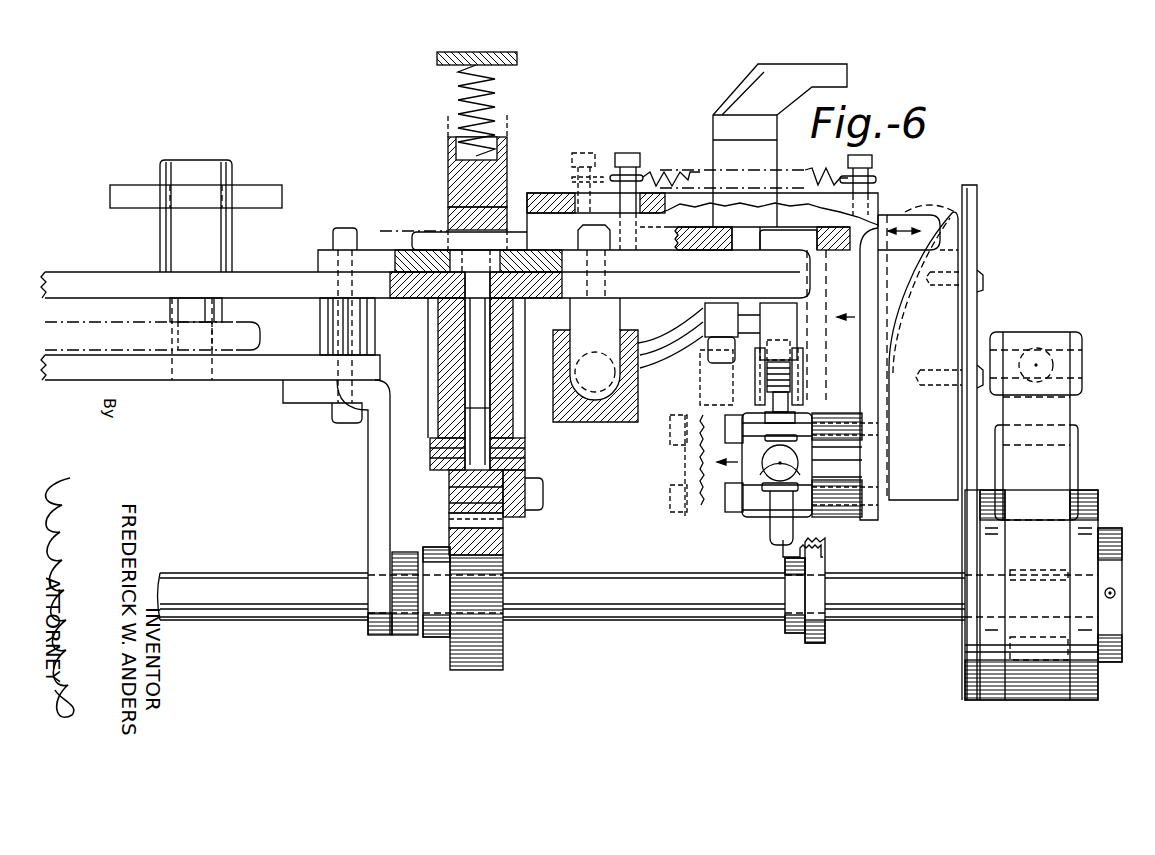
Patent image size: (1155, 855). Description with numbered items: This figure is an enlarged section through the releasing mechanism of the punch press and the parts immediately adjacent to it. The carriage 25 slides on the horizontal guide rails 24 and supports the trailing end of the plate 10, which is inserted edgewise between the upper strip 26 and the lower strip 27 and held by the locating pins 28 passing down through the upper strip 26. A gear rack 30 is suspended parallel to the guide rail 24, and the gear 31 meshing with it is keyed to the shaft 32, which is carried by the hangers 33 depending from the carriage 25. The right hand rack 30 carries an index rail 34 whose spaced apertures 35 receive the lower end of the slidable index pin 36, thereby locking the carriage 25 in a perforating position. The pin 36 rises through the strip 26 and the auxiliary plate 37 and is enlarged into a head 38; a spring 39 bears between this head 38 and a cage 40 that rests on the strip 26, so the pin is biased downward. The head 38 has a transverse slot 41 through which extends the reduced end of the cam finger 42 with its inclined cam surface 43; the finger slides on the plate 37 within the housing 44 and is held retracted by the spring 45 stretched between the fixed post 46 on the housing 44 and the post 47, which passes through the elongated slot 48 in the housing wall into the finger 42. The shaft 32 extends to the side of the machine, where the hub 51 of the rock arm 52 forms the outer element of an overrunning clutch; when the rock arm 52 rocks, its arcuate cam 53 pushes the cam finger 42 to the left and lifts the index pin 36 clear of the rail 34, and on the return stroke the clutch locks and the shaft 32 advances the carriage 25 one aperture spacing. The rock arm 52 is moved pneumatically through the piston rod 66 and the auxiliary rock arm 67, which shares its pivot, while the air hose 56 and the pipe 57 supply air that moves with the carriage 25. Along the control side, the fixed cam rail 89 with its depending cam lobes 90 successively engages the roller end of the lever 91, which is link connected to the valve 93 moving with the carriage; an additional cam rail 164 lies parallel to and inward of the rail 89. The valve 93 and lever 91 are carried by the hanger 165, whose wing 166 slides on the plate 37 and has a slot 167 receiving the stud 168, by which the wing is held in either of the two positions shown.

The plate 10 is at (262, 337).
The guide rail 24 is at (593, 423).
The carriage 25 is at (284, 256).
The upper strip 26 is at (88, 272).
The lower strip 27 is at (162, 381).
The locating pin 28 is at (202, 160).
The gear rack 30 is at (449, 480).
The gear 31 is at (487, 671).
The shaft 32 is at (628, 596).
The hanger 33 is at (368, 494).
The index rail 34 is at (507, 518).
The aperture 35 is at (517, 462).
The index pin 36 is at (476, 366).
The auxiliary plate 37 is at (330, 228).
The head 38 is at (448, 174).
The spring 39 is at (497, 96).
The cage 40 is at (498, 52).
The slot 41 is at (465, 218).
The cam finger 42 is at (702, 221).
The cam surface 43 is at (527, 214).
The housing 44 is at (877, 197).
The spring 45 is at (810, 168).
The fixed post 46 is at (870, 156).
The post 47 is at (625, 153).
The elongated slot 48 is at (575, 201).
The hub 51 is at (1082, 701).
The rock arm 52 is at (977, 313).
The arcuate cam 53 is at (923, 352).
The air hose 56 is at (777, 545).
The pipe 57 is at (777, 423).
The piston rod 66 is at (1042, 348).
The auxiliary rock arm 67 is at (1058, 416).
The cam rail 89 is at (767, 331).
The cam lobe 90 is at (803, 356).
The lever 91 is at (790, 379).
The valve 93 is at (745, 516).
The additional cam rail 164 is at (702, 354).
The hanger 165 is at (870, 521).
The wing 166 is at (680, 251).
The slot 167 is at (817, 241).
The stud 168 is at (760, 252).